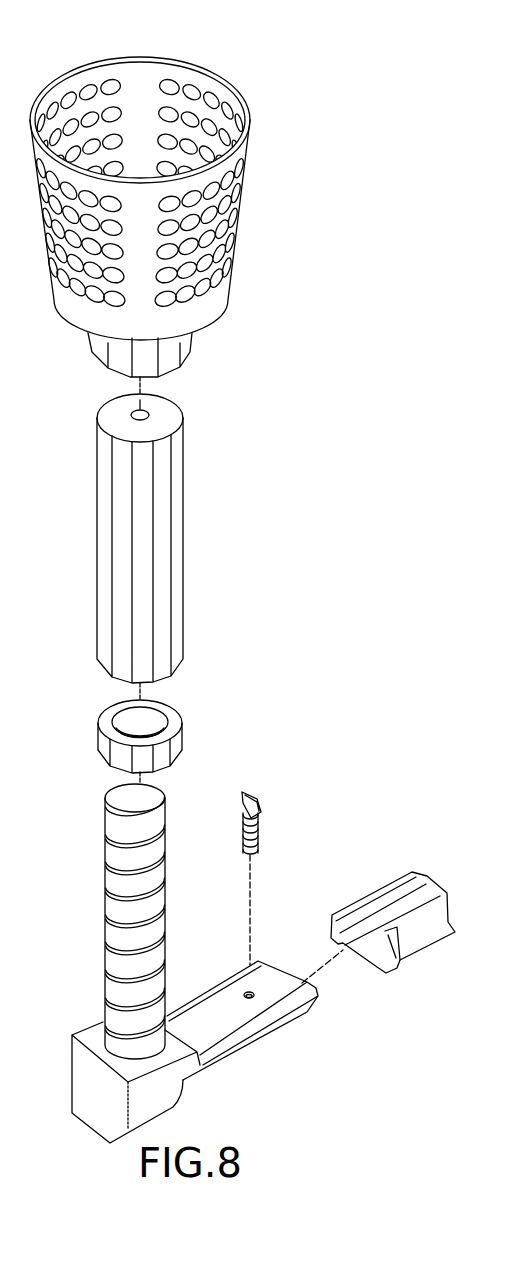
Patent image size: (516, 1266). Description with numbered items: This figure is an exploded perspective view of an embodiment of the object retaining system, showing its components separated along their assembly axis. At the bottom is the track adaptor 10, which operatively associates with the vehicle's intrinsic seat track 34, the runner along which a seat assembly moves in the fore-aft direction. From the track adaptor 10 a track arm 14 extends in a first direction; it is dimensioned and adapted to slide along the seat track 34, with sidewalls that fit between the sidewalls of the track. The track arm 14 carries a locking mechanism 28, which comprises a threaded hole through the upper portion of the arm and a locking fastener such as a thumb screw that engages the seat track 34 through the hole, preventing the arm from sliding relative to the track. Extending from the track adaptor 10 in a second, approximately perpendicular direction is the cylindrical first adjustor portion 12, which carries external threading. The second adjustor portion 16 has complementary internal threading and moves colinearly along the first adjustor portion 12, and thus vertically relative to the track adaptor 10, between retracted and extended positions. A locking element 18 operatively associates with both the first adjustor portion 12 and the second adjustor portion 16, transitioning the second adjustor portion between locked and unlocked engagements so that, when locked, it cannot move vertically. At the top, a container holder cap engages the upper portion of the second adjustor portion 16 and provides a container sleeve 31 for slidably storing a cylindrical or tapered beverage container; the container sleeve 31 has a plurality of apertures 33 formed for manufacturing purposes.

The track adaptor 10 is at (95, 1100).
The first adjustor portion 12 is at (117, 933).
The track arm 14 is at (227, 1037).
The second adjustor portion 16 is at (177, 540).
The locking element 18 is at (175, 722).
The locking mechanism 28 is at (242, 800).
The container sleeve 31 is at (157, 205).
The apertures 33 is at (168, 85).
The seat track 34 is at (353, 905).